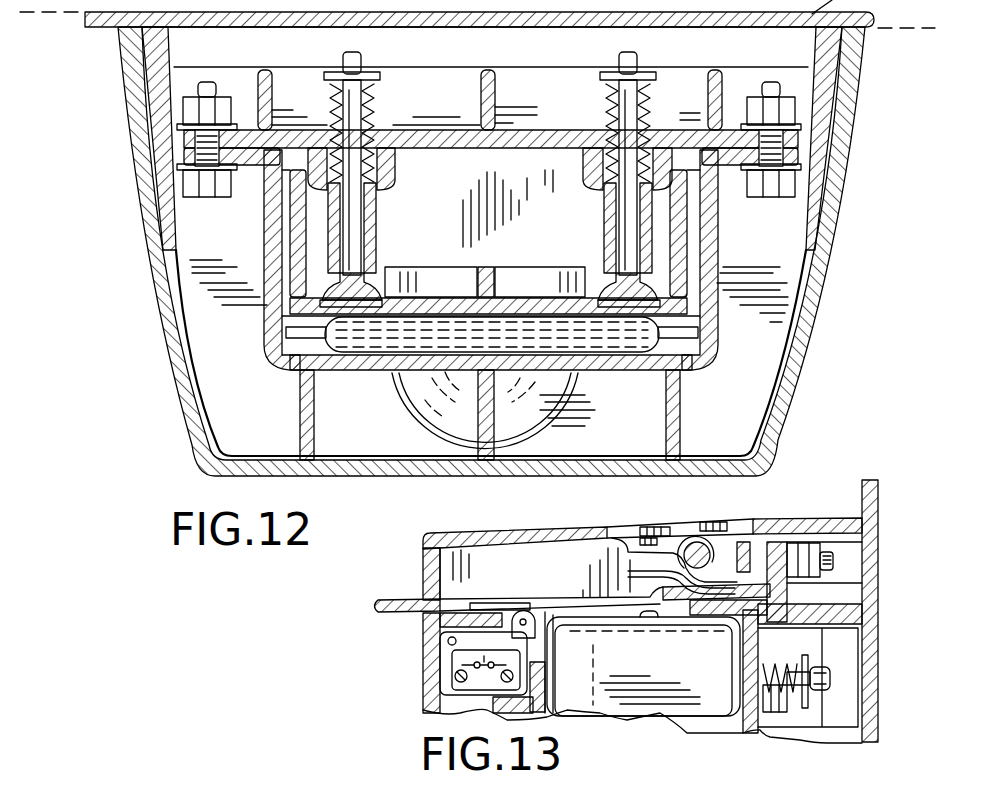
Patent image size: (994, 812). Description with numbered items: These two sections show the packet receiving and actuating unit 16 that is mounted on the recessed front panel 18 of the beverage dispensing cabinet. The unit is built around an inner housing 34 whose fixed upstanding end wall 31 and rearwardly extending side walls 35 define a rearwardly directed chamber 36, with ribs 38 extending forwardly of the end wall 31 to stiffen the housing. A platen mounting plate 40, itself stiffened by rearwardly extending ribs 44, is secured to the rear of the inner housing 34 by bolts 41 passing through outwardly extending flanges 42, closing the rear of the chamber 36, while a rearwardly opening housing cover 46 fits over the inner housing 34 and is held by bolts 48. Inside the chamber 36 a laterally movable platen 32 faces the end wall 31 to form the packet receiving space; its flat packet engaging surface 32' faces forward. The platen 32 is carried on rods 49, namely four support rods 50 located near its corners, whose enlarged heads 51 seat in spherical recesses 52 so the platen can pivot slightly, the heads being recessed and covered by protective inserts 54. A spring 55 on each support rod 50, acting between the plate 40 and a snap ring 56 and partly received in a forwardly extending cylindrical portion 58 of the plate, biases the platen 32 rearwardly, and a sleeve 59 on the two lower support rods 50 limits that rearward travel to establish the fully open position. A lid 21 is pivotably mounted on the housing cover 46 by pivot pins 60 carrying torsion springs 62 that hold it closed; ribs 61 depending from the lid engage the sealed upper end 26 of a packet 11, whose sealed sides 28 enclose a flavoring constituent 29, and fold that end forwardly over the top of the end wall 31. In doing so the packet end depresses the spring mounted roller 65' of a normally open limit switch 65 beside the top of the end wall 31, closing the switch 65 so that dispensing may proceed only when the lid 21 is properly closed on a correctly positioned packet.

In FIG. 12, the individual serving packet 11 is at (590, 366).
In FIG. 12, the packet receiving and actuating unit 16 is at (164, 357).
In FIG. 13, the front panel 18 is at (873, 563).
In FIG. 13, the lid 21 is at (470, 534).
In FIG. 13, the sealed peripheral upper end 26 is at (497, 604).
In FIG. 12, the sealed sides 28 is at (288, 372).
In FIG. 12, the flavoring constituent 29 is at (352, 368).
In FIG. 12, the fixed upstanding wall 31 is at (396, 386).
In FIG. 13, the fixed upstanding wall 31 is at (537, 703).
In FIG. 12, the platen 32 is at (397, 256).
In FIG. 13, the platen 32 is at (650, 717).
In FIG. 12, the packet engaging surface 32' is at (527, 265).
In FIG. 12, the inner housing 34 is at (262, 243).
In FIG. 12, the side walls 35 is at (272, 302).
In FIG. 12, the rearwardly directed chamber 36 is at (704, 216).
In FIG. 12, the ribs 38 is at (298, 428).
In FIG. 12, the platen mounting plate 40 is at (437, 133).
In FIG. 13, the platen mounting plate 40 is at (750, 727).
In FIG. 12, the bolts 41 is at (187, 192).
In FIG. 12, the outwardly extending flanges 42 is at (174, 166).
In FIG. 12, the ribs 44 is at (270, 72).
In FIG. 12, the housing cover 46 is at (190, 406).
In FIG. 13, the housing cover 46 is at (823, 518).
In FIG. 13, the bolts 48 is at (741, 540).
In FIG. 12, the rods 49 is at (291, 212).
In FIG. 13, the rods 49 is at (638, 612).
In FIG. 12, the support rods 50 is at (377, 205).
In FIG. 13, the support rods 50 is at (832, 680).
In FIG. 12, the enlarged heads 51 is at (374, 255).
In FIG. 12, the spherical recesses 52 is at (352, 288).
In FIG. 12, the protective inserts 54 is at (272, 345).
In FIG. 12, the spring 55 is at (374, 101).
In FIG. 12, the snap ring 56 is at (365, 68).
In FIG. 12, the cylindrical portions 58 is at (397, 163).
In FIG. 12, the sleeve 59 is at (375, 229).
In FIG. 13, the pivot pins 60 is at (694, 541).
In FIG. 13, the ribs 61 is at (577, 582).
In FIG. 13, the torsion springs 62 is at (681, 530).
In FIG. 13, the limit switch 65 is at (444, 669).
In FIG. 13, the spring mounted roller 65' is at (529, 595).